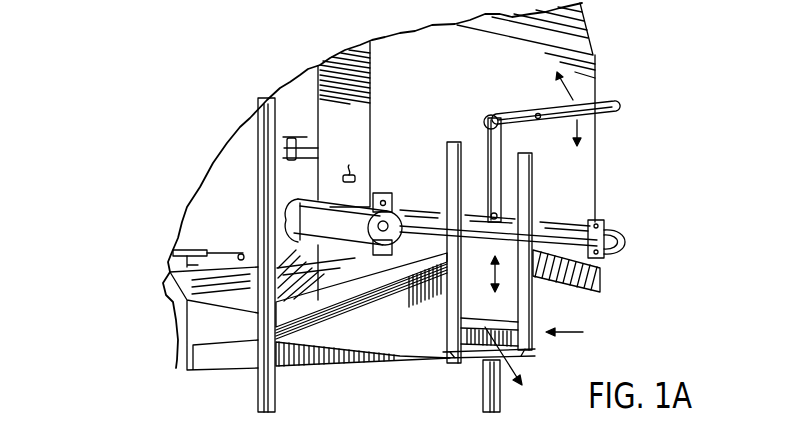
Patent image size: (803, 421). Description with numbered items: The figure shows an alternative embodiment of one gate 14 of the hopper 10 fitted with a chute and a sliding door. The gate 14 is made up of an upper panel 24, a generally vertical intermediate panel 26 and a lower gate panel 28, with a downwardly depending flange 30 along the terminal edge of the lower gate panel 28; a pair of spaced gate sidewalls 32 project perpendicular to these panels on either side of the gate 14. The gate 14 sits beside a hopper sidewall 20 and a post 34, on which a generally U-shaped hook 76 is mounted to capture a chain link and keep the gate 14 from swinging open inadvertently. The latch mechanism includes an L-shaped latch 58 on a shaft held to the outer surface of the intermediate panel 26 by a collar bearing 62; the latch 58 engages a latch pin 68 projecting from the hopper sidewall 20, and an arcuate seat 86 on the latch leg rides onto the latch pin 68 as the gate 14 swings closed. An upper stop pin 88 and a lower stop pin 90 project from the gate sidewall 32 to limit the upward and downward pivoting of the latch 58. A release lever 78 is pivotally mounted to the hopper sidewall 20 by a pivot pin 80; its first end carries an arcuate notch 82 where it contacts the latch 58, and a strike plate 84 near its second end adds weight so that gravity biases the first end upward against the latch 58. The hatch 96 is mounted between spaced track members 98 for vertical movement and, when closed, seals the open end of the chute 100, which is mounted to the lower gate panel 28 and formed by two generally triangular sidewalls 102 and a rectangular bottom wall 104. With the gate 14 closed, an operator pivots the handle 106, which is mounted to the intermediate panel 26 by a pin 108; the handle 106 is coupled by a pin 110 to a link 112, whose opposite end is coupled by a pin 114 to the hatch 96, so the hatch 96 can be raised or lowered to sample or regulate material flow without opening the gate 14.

The hopper 10 is at (104, 293).
The gate 14 is at (598, 45).
The hopper sidewall 20 is at (212, 182).
The upper panel 24 is at (552, 26).
The intermediate panel 26 is at (454, 66).
The lower gate panel 28 is at (293, 330).
The flange 30 is at (176, 366).
The gate sidewall 32 is at (333, 105).
The post 34 is at (276, 401).
The L-shaped latch 58 is at (373, 200).
The collar bearing 62 is at (376, 203).
The latch pin 68 is at (298, 206).
The hook 76 is at (292, 146).
The release lever 78 is at (172, 270).
The pivot pin 80 is at (243, 252).
The arcuate notch 82 is at (256, 290).
The strike plate 84 is at (172, 243).
The arcuate seat 86 is at (285, 219).
The upper stop pin 88 is at (350, 175).
The lower stop pin 90 is at (332, 244).
The hatch 96 is at (505, 247).
The track member 98 is at (456, 306).
The chute 100 is at (587, 334).
The chute sidewall 102 is at (393, 336).
The bottom wall 104 is at (474, 358).
The handle 106 is at (617, 110).
The pin 108 is at (538, 113).
The pin 110 is at (489, 116).
The link 112 is at (492, 147).
The pin 114 is at (499, 214).